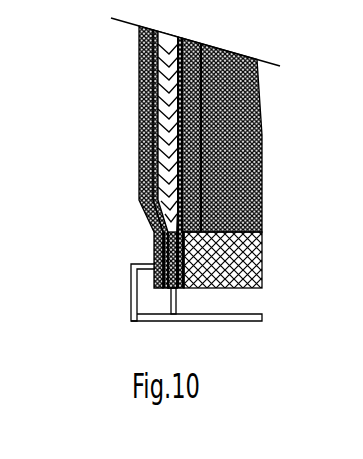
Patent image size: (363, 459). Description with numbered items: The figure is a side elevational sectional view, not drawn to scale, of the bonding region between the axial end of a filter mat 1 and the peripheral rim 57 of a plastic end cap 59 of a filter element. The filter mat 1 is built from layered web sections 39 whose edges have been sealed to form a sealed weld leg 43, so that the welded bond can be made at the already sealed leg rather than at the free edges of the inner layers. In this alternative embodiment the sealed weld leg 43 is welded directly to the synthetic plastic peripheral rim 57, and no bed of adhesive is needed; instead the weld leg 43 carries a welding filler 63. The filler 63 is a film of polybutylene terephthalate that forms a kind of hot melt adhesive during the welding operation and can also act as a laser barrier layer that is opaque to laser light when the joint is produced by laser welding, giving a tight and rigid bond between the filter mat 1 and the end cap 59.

The filter mat 1 is at (120, 170).
The web section 39 is at (263, 135).
The sealed weld leg 43 is at (165, 247).
The peripheral rim 57 is at (131, 284).
The end cap 59 is at (238, 318).
The welding filler 63 is at (171, 297).